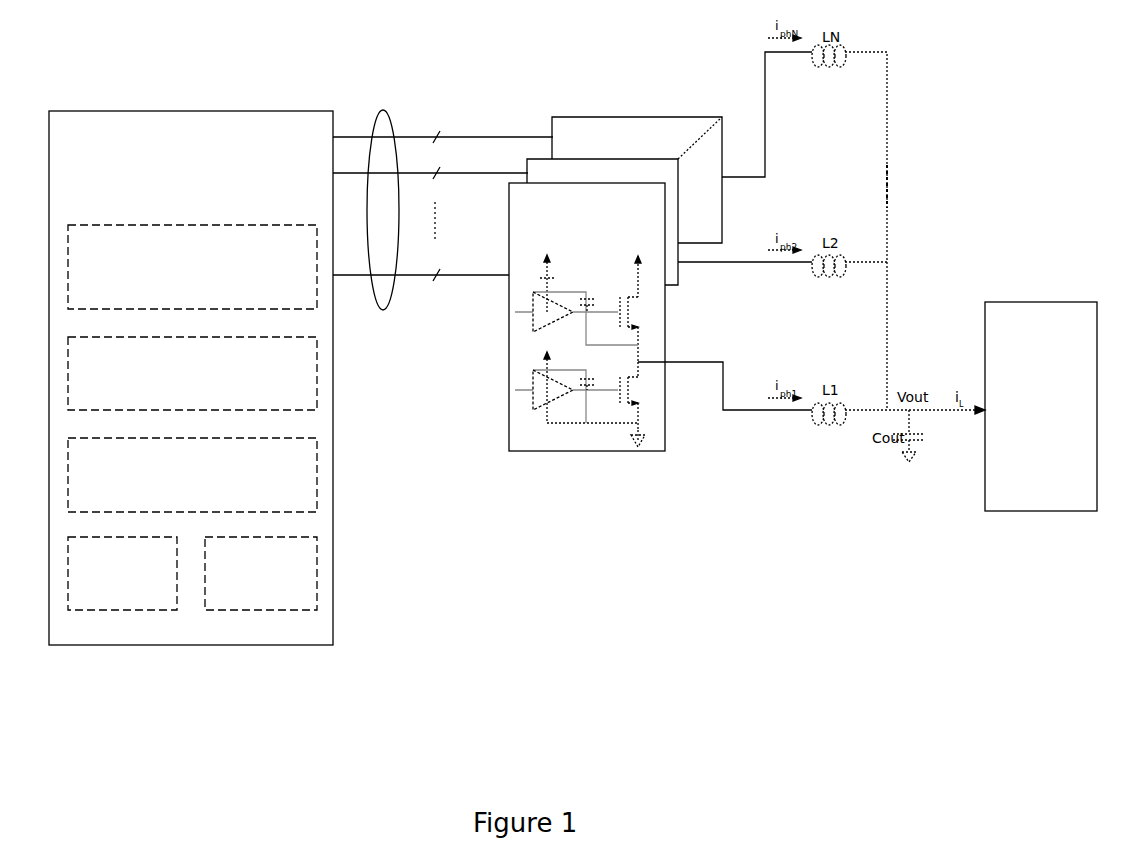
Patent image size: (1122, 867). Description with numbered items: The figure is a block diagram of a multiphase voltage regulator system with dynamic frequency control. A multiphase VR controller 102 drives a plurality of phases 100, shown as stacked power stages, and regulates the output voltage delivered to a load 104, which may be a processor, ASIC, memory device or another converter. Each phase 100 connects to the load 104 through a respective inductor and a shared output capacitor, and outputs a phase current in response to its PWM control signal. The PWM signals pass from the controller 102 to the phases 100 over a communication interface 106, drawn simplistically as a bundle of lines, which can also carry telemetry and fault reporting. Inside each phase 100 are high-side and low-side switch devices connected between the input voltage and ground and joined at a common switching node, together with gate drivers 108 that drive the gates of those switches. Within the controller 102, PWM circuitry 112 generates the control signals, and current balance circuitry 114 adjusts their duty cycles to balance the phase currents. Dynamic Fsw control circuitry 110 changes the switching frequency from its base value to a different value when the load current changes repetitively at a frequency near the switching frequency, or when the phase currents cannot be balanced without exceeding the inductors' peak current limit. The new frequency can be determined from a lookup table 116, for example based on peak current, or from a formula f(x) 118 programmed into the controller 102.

The phase 100 is at (660, 284).
The VR controller 102 is at (191, 378).
The load 104 is at (1041, 406).
The communication interface 106 is at (383, 110).
The gate driver 108 is at (553, 351).
The dynamic frequency control circuitry 110 is at (192, 267).
The PWM circuitry 112 is at (192, 373).
The current balance circuitry 114 is at (606, 275).
The lookup table 116 is at (122, 573).
The formula f(x) 118 is at (261, 573).